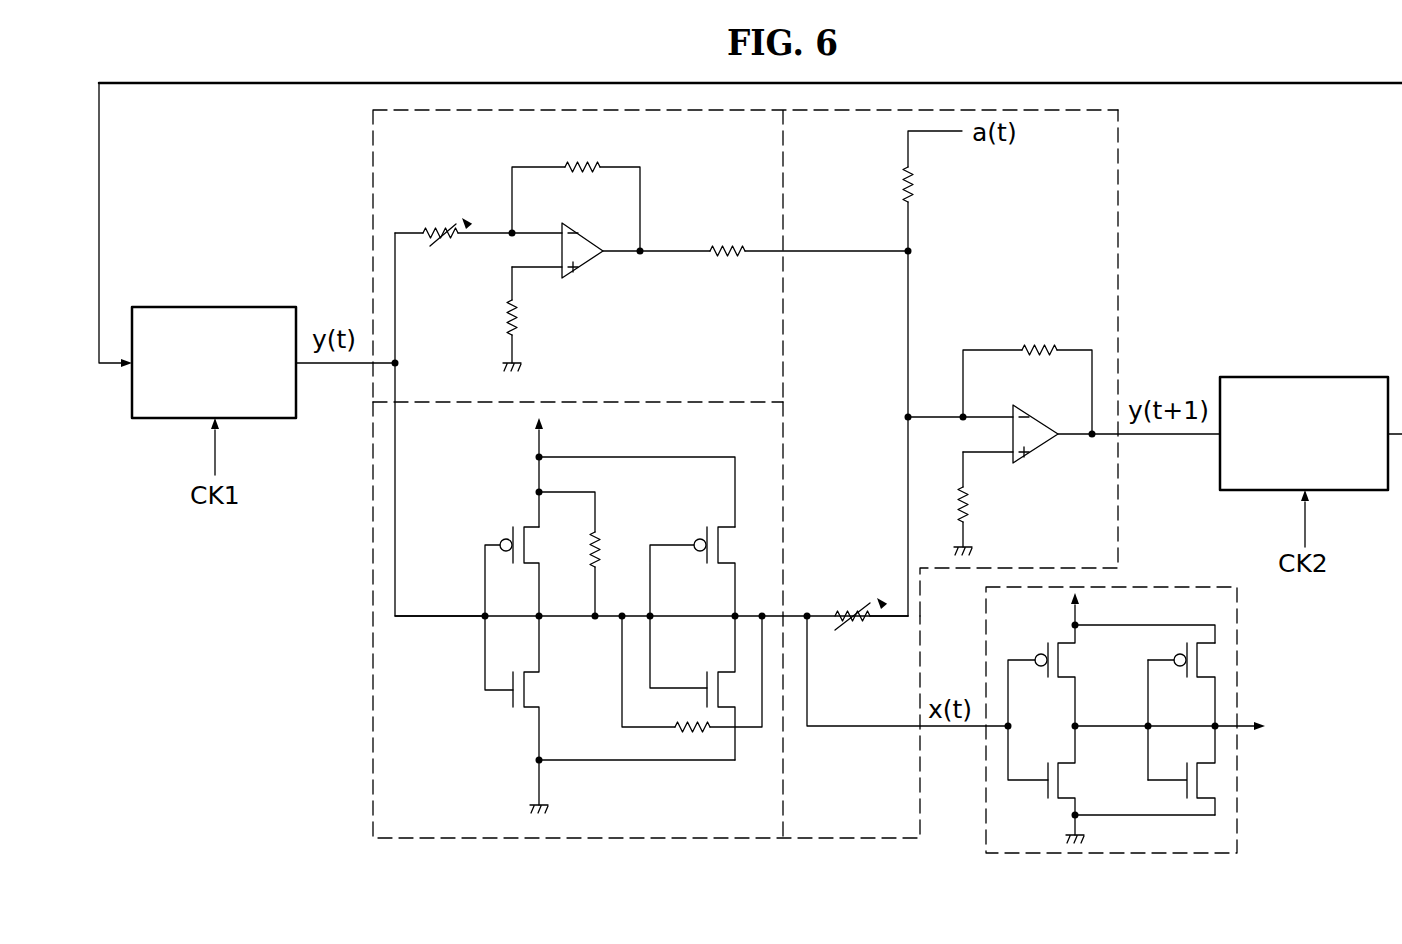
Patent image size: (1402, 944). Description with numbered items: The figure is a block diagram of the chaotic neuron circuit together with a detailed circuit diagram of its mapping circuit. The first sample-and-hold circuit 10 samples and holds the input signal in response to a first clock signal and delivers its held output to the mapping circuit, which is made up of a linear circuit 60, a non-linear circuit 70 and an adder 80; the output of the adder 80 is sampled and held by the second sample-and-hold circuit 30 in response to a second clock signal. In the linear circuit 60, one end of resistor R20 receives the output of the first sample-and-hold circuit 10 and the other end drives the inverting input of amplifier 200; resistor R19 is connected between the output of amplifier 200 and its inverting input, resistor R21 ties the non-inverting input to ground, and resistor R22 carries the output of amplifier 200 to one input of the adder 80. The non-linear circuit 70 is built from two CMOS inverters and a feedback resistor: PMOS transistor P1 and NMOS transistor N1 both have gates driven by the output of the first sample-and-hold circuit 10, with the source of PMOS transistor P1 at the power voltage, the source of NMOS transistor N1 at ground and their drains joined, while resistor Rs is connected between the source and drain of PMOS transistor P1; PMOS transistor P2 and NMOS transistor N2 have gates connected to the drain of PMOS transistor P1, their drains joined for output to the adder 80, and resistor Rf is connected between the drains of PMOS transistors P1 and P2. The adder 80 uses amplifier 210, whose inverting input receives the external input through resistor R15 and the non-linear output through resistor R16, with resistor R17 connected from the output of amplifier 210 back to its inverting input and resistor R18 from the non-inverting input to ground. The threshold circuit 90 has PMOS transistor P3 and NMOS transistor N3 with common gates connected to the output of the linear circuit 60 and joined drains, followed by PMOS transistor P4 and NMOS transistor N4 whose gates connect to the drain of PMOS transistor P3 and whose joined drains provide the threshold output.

The first sample-and-hold circuit 10 is at (205, 307).
The second sample-and-hold circuit 30 is at (1290, 377).
The linear circuit 60 is at (373, 143).
The non-linear circuit 70 is at (373, 762).
The adder 80 is at (1118, 133).
The threshold circuit 90 is at (1237, 600).
The amplifier 200 is at (590, 262).
The amplifier 210 is at (1016, 409).
The resistor R15 is at (934, 373).
The resistor R16 is at (862, 600).
The resistor R17 is at (1027, 375).
The resistor R18 is at (989, 503).
The resistor R19 is at (576, 192).
The resistor R20 is at (453, 218).
The resistor R21 is at (538, 319).
The resistor R22 is at (804, 233).
The resistor Rs is at (587, 554).
The resistor Rf is at (692, 692).
The PMOS transistor P1 is at (524, 608).
The PMOS transistor P2 is at (704, 607).
The PMOS transistor P3 is at (1056, 702).
The PMOS transistor P4 is at (1196, 684).
The NMOS transistor N1 is at (540, 688).
The NMOS transistor N2 is at (703, 688).
The NMOS transistor N3 is at (1078, 770).
The NMOS transistor N4 is at (1198, 770).